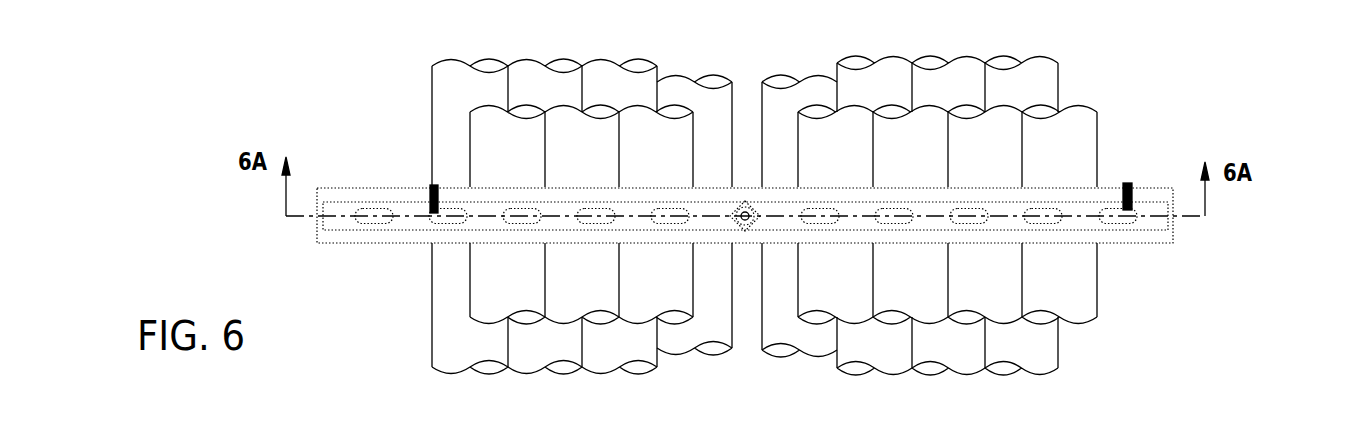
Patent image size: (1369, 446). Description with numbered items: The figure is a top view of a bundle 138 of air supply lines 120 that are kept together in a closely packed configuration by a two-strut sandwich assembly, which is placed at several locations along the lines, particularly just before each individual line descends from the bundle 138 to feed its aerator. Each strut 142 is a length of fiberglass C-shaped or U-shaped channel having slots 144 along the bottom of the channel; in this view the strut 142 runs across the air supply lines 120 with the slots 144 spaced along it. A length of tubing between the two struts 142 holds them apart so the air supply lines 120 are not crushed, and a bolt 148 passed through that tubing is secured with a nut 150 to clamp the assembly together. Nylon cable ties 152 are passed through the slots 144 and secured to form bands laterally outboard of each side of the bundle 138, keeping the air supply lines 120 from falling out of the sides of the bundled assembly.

The air supply lines 120 is at (500, 262).
The bundle 138 is at (398, 119).
The strut 142 is at (1168, 235).
The slots 144 is at (980, 213).
The bolt 148 is at (745, 205).
The nut 150 is at (738, 221).
The nylon cable ties 152 is at (433, 187).